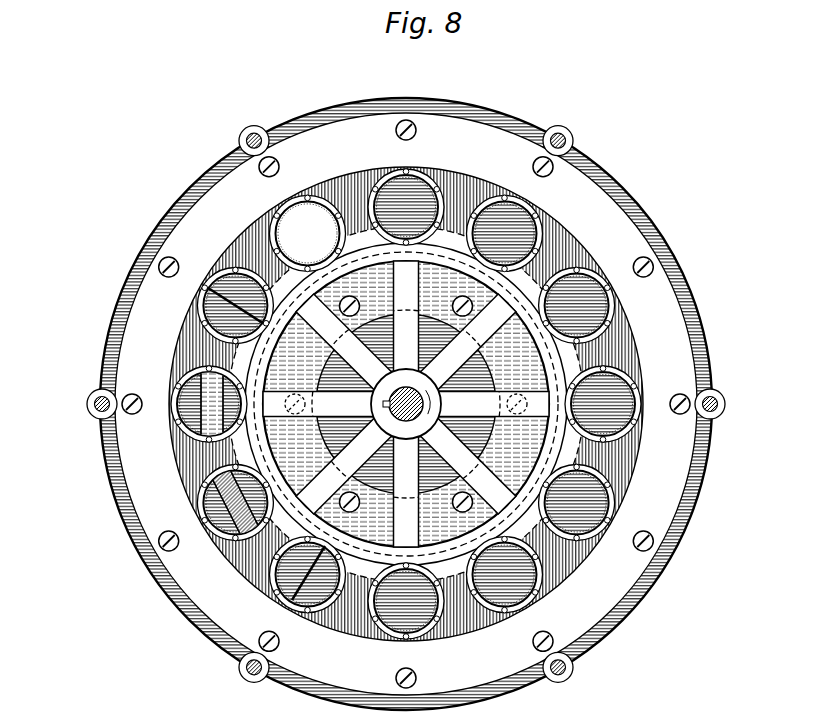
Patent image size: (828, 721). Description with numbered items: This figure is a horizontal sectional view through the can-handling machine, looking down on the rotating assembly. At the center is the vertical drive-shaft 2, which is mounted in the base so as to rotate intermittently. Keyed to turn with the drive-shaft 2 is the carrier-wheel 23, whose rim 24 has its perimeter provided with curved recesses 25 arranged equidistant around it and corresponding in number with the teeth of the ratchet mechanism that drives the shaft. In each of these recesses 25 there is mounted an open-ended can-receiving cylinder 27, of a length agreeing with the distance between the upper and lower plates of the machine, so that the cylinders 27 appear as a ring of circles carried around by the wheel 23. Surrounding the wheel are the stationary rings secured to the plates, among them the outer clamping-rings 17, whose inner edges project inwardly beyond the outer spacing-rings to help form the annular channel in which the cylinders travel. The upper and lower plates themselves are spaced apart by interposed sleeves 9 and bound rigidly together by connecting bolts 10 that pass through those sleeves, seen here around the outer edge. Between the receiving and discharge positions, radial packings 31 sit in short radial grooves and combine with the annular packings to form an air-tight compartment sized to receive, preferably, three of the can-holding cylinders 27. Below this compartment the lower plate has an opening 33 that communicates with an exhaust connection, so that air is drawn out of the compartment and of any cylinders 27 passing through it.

The drive-shaft 2 is at (403, 405).
The sleeves 9 is at (573, 149).
The connecting bolts 10 is at (559, 139).
The outer clamping-rings 17 is at (663, 480).
The carrier-wheel 23 is at (537, 412).
The rim 24 is at (353, 553).
The curved recesses 25 is at (430, 557).
The can-receiving cylinder 27 is at (607, 520).
The radial packings 31 is at (225, 301).
The opening 33 is at (205, 507).